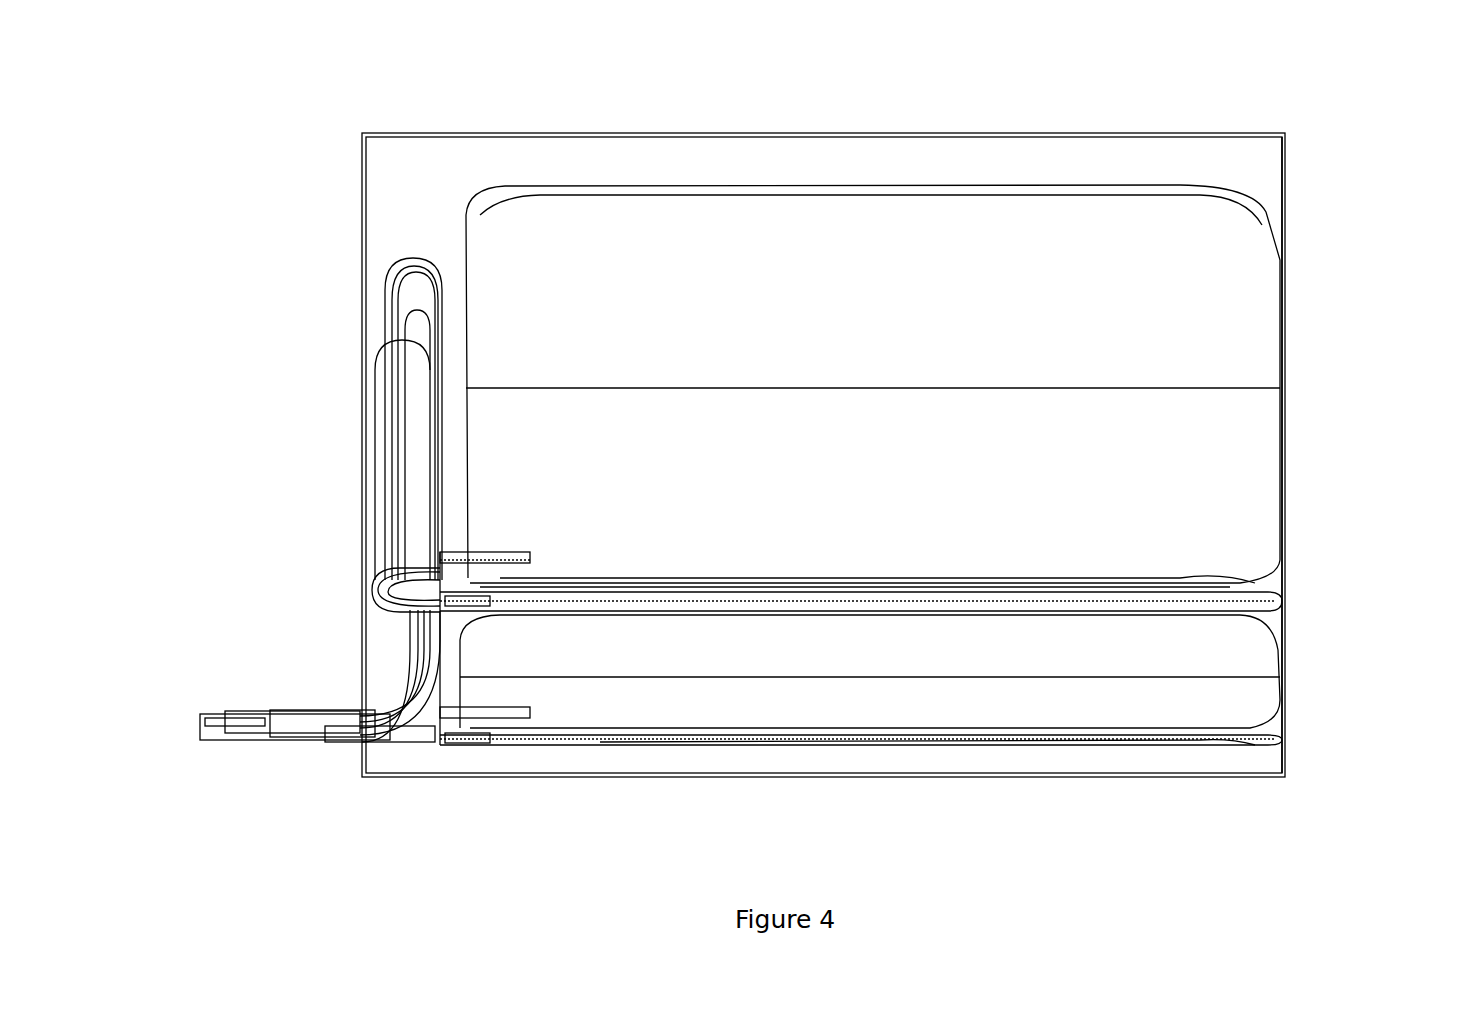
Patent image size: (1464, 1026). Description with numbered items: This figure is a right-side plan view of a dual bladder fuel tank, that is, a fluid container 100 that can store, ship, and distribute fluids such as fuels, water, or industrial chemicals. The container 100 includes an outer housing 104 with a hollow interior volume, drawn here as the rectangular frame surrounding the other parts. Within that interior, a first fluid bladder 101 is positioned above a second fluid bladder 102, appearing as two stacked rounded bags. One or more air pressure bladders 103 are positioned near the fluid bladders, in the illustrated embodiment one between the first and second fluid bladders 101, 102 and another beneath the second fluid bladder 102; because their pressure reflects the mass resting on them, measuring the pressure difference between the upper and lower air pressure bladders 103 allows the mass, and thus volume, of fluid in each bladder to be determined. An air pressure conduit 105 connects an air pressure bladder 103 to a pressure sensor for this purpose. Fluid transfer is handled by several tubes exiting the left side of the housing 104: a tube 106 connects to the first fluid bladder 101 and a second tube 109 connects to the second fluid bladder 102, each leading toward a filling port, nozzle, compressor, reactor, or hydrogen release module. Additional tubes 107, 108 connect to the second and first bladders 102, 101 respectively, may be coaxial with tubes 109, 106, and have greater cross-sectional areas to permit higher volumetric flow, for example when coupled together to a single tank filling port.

The fluid container 100 is at (758, 397).
The first fluid bladder 101 is at (873, 384).
The second fluid bladder 102 is at (870, 671).
The air pressure bladder 103 is at (1325, 455).
The outer housing 104 is at (823, 417).
The air pressure conduit 105 is at (677, 648).
The tube 106 is at (861, 726).
The tube 107 is at (320, 676).
The tube 108 is at (408, 419).
The second tube 109 is at (406, 590).